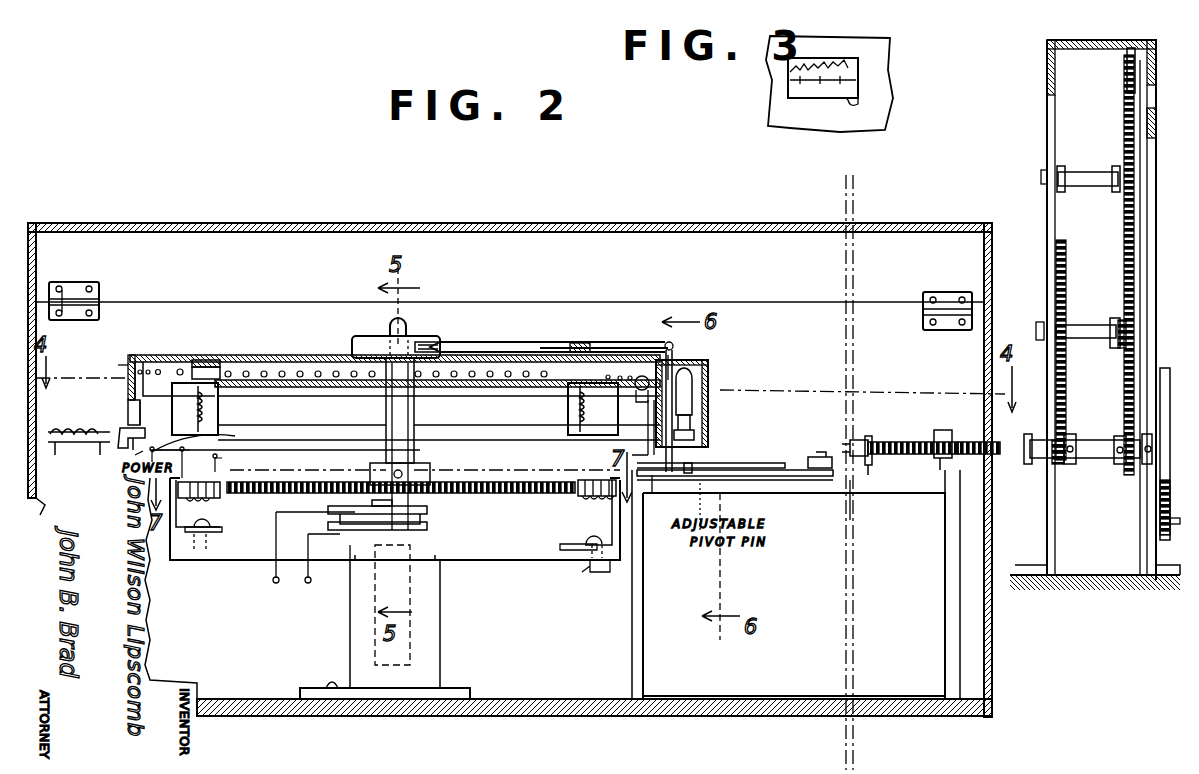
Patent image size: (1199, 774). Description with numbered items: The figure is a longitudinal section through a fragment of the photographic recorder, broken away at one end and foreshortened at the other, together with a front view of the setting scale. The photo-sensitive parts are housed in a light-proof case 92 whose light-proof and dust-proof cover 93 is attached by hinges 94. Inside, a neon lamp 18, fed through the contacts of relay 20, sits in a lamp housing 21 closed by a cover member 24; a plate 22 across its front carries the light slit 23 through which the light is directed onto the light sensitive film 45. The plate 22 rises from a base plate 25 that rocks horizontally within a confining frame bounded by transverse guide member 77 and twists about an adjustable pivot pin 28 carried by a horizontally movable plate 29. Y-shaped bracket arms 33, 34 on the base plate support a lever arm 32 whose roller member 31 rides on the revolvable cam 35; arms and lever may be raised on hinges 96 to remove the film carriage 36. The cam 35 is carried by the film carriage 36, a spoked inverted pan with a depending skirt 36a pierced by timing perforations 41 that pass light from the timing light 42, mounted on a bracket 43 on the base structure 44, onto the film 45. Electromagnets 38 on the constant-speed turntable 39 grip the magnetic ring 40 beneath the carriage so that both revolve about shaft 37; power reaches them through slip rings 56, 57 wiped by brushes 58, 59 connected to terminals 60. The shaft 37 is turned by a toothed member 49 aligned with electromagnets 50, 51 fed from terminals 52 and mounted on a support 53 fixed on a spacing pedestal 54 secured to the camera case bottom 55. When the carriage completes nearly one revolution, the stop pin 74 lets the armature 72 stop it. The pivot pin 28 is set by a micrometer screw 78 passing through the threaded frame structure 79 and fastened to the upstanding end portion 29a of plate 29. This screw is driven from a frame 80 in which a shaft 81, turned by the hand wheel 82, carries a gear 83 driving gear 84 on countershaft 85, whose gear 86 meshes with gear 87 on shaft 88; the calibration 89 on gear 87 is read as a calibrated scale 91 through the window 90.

In FIG. 2, the neon lamp 18 is at (692, 412).
In FIG. 2, the relay 20 is at (79, 465).
In FIG. 2, the lamp housing 21 is at (700, 382).
In FIG. 2, the plate 22 is at (658, 493).
In FIG. 2, the light slit 23 is at (672, 362).
In FIG. 2, the cover member 24 is at (702, 358).
In FIG. 2, the base plate 25 is at (698, 466).
In FIG. 2, the adjustable pivot pin 28 is at (738, 462).
In FIG. 2, the horizontally movable plate 29 is at (798, 480).
In FIG. 2, the upstanding end portion 29a is at (872, 440).
In FIG. 2, the roller member 31 is at (430, 340).
In FIG. 2, the lever arm 32 is at (490, 342).
In FIG. 2, the Y-shaped bracket arm 33 is at (606, 344).
In FIG. 2, the Y-shaped bracket arm 34 is at (580, 343).
In FIG. 2, the revolvable cam 35 is at (352, 345).
In FIG. 2, the film carriage 36 is at (256, 356).
In FIG. 2, the depending skirt 36a is at (128, 410).
In FIG. 2, the shaft 37 is at (392, 330).
In FIG. 2, the electromagnets 38 is at (212, 425).
In FIG. 2, the turntable 39 is at (605, 418).
In FIG. 2, the magnetic ring 40 is at (178, 360).
In FIG. 2, the timing perforations 41 is at (150, 372).
In FIG. 2, the timing light 42 is at (645, 376).
In FIG. 2, the bracket 43 is at (640, 427).
In FIG. 2, the base structure 44 is at (638, 580).
In FIG. 2, the light sensitive film 45 is at (120, 368).
In FIG. 2, the toothed member 49 is at (520, 500).
In FIG. 2, the electromagnet 50 is at (205, 510).
In FIG. 2, the electromagnet 51 is at (595, 505).
In FIG. 2, the terminals 52 is at (250, 434).
In FIG. 2, the support 53 is at (486, 560).
In FIG. 2, the spacing pedestal 54 is at (438, 650).
In FIG. 2, the camera case bottom 55 is at (510, 699).
In FIG. 2, the slip ring 56 is at (427, 512).
In FIG. 2, the slip ring 57 is at (430, 528).
In FIG. 2, the brush 58 is at (360, 530).
In FIG. 2, the brush 59 is at (372, 560).
In FIG. 2, the terminals 60 is at (288, 585).
In FIG. 2, the armature 72 is at (118, 450).
In FIG. 2, the stop pin 74 is at (154, 410).
In FIG. 2, the transverse guide member 77 is at (820, 452).
In FIG. 2, the micrometer screw 78 is at (905, 462).
In FIG. 2, the threaded frame structure 79 is at (948, 434).
In FIG. 2, the frame 80 is at (1130, 540).
In FIG. 3, the frame 80 is at (814, 122).
In FIG. 2, the shaft 81 is at (1100, 460).
In FIG. 2, the hand wheel 82 is at (1158, 368).
In FIG. 2, the gear 83 is at (1056, 468).
In FIG. 2, the gear 84 is at (1072, 385).
In FIG. 2, the countershaft 85 is at (1080, 328).
In FIG. 2, the gear 86 is at (1126, 348).
In FIG. 2, the gear 87 is at (1124, 250).
In FIG. 3, the gear 87 is at (838, 62).
In FIG. 2, the shaft 88 is at (1080, 175).
In FIG. 3, the calibration 89 is at (814, 62).
In FIG. 2, the window 90 is at (1150, 90).
In FIG. 3, the window 90 is at (860, 112).
In FIG. 3, the calibrated scale 91 is at (808, 88).
In FIG. 2, the light-proof case 92 is at (993, 648).
In FIG. 2, the cover 93 is at (610, 231).
In FIG. 2, the hinges 94 is at (75, 288).
In FIG. 2, the hinges 96 is at (669, 343).